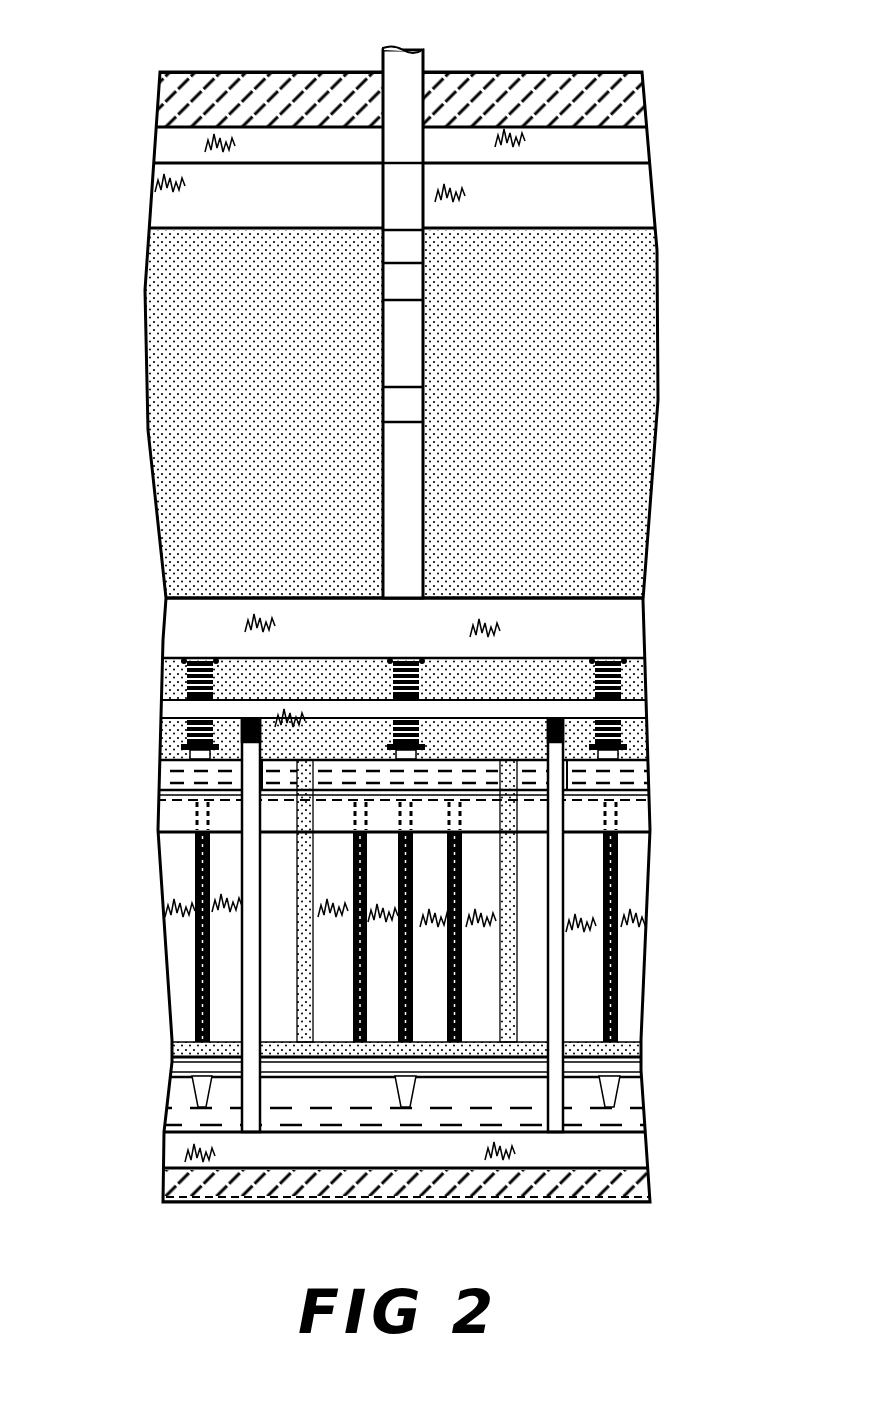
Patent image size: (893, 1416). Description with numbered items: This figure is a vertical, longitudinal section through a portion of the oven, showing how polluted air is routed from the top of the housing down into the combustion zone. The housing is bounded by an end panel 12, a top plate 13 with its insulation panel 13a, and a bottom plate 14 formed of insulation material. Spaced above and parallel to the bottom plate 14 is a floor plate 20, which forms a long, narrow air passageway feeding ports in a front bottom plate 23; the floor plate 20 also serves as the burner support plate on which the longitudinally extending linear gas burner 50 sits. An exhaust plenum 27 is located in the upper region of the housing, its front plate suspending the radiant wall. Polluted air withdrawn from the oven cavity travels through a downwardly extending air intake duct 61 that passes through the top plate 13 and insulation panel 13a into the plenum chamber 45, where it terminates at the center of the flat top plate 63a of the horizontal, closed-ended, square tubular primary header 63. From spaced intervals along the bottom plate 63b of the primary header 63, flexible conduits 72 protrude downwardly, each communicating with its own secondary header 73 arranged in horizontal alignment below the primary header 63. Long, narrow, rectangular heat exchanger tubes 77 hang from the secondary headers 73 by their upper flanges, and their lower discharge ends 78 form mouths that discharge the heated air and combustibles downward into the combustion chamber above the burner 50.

The end panel 12 is at (160, 300).
The top plate 13 is at (493, 72).
The insulation panel 13a is at (585, 74).
The bottom plate 14 is at (627, 1170).
The floor plate 20 is at (620, 1132).
The front bottom plate 23 is at (536, 1198).
The exhaust plenum 27 is at (640, 195).
The plenum chamber 45 is at (637, 413).
The linear gas burner 50 is at (178, 1095).
The air intake duct 61 is at (415, 485).
The primary header 63 is at (630, 635).
The top plate of primary header 63a is at (620, 598).
The bottom plate of primary header 63b is at (647, 675).
The flexible conduits 72 is at (423, 682).
The secondary headers 73 is at (473, 767).
The heat exchanger tubes 77 is at (225, 950).
The lower discharge end 78 is at (175, 1055).